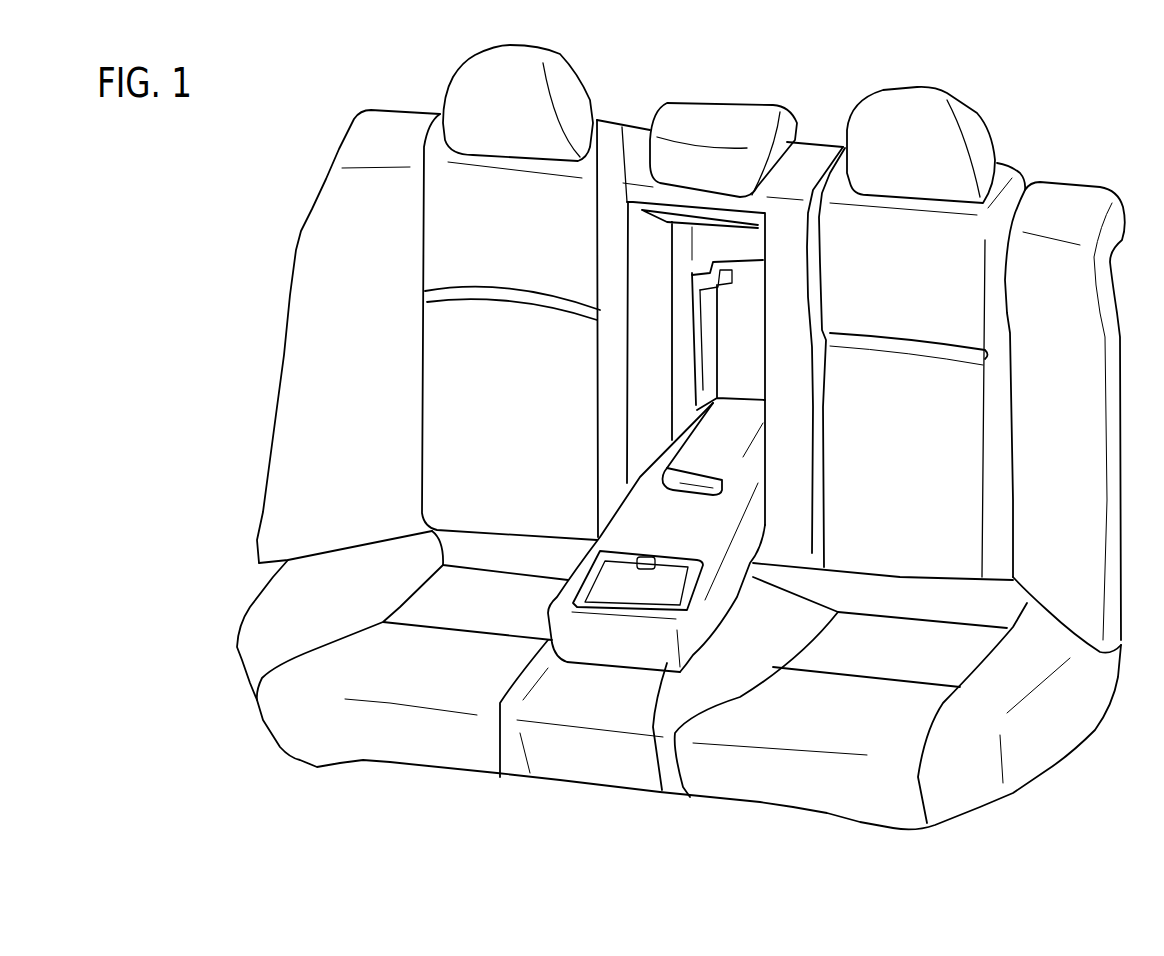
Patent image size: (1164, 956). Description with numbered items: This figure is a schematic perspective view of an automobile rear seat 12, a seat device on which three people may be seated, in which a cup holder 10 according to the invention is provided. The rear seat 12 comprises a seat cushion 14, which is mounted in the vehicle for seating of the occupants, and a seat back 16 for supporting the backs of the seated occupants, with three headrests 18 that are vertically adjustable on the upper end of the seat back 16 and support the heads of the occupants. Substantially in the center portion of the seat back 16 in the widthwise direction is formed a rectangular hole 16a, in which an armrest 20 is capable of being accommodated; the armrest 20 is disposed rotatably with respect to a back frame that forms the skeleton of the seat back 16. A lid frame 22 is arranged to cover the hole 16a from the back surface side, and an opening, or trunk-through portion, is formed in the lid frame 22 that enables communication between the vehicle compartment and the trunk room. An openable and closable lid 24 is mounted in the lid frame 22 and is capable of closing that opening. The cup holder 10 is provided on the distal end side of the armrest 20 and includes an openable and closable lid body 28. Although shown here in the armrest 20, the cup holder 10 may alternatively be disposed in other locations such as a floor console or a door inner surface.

The cup holder 10 is at (650, 555).
The rear seat 12 is at (286, 132).
The seat cushion 14 is at (907, 726).
The seat back 16 is at (973, 463).
The rectangular hole 16a is at (745, 247).
The headrest 18 is at (558, 76).
The armrest 20 is at (697, 618).
The lid frame 22 is at (697, 277).
The lid 24 is at (727, 443).
The lid body 28 is at (603, 592).